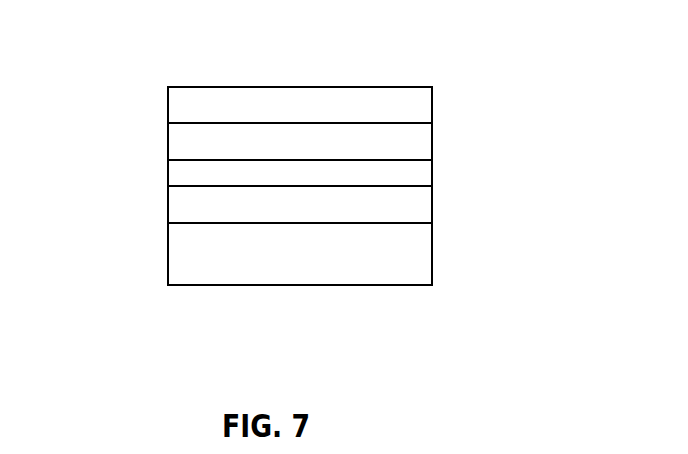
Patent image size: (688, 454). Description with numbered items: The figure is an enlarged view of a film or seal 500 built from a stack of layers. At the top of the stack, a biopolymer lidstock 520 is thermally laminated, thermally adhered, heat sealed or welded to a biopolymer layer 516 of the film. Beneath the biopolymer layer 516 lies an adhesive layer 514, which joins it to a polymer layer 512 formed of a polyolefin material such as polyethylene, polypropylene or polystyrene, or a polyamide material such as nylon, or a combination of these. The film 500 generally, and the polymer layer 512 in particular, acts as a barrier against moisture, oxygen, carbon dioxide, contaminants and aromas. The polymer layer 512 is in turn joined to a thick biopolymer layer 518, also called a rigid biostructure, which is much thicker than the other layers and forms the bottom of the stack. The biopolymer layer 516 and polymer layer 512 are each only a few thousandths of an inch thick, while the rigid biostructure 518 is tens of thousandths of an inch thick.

The film 500 is at (483, 198).
The biopolymer lidstock 520 is at (168, 100).
The biopolymer layer 516 is at (168, 145).
The adhesive layer 514 is at (168, 169).
The polymer layer 512 is at (168, 208).
The thick biopolymer layer 518 is at (168, 270).